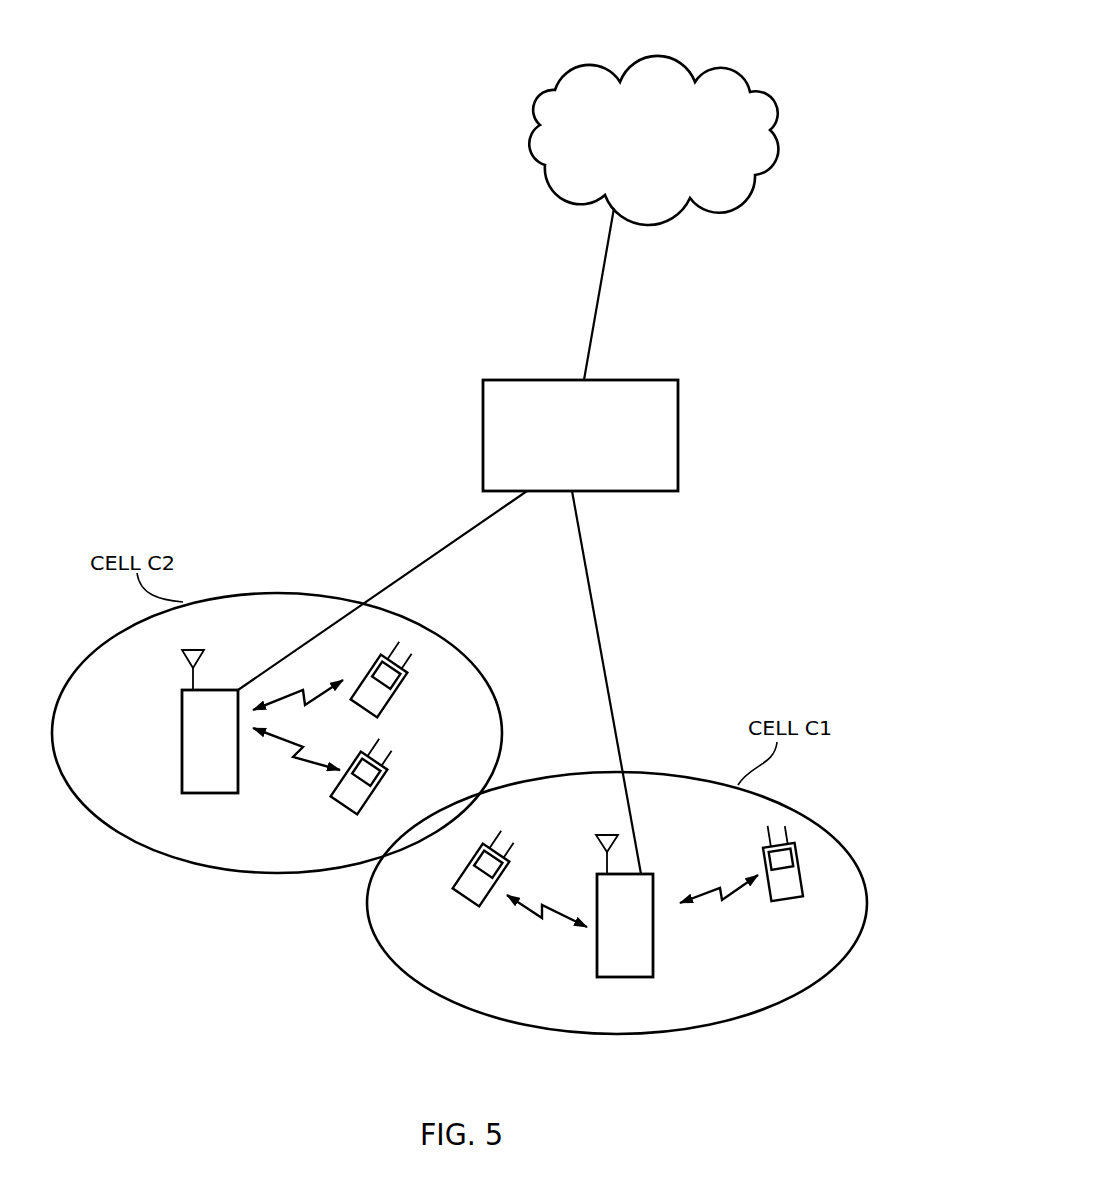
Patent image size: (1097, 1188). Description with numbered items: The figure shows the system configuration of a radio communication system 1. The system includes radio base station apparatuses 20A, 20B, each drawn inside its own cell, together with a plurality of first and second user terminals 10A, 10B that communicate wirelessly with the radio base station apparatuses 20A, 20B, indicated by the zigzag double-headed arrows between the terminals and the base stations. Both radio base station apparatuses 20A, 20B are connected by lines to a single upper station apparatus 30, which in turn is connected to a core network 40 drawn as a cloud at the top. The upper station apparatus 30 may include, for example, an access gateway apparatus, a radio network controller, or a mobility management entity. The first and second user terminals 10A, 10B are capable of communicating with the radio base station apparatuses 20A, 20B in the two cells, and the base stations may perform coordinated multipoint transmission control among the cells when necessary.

The radio communication system 1 is at (312, 362).
The core network 40 is at (730, 70).
The upper station apparatus 30 is at (678, 422).
The radio base station apparatus 20A is at (597, 958).
The radio base station apparatus 20B is at (182, 777).
The first user terminal 10A is at (398, 695).
The second user terminal 10B is at (380, 794).